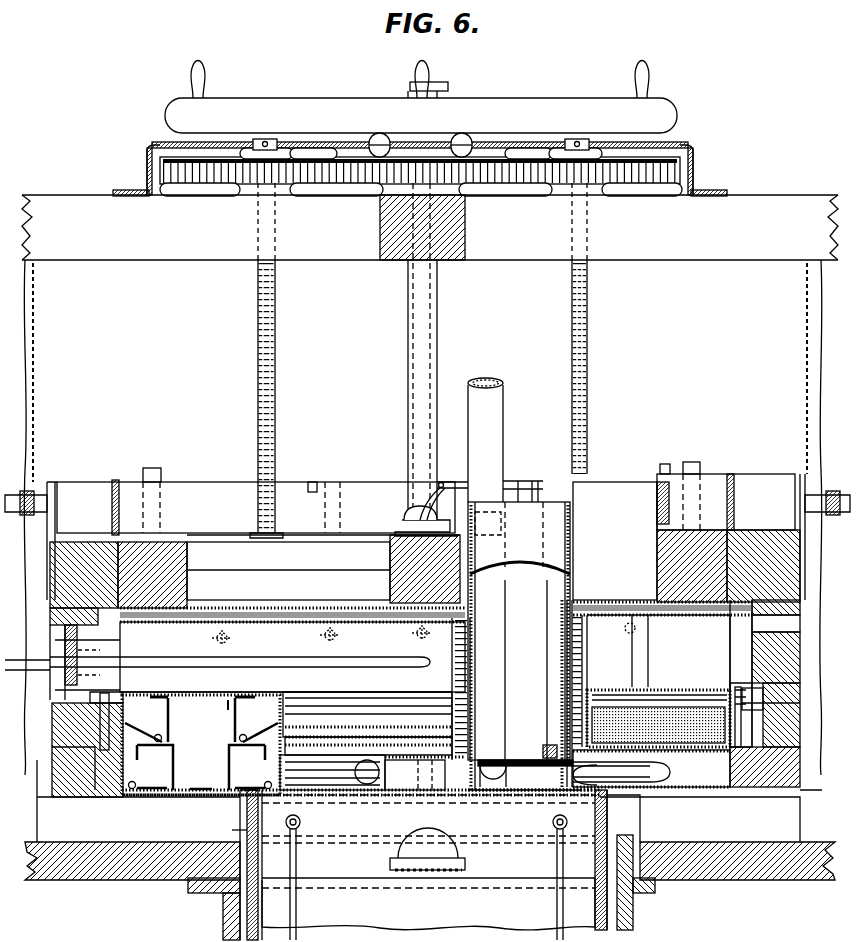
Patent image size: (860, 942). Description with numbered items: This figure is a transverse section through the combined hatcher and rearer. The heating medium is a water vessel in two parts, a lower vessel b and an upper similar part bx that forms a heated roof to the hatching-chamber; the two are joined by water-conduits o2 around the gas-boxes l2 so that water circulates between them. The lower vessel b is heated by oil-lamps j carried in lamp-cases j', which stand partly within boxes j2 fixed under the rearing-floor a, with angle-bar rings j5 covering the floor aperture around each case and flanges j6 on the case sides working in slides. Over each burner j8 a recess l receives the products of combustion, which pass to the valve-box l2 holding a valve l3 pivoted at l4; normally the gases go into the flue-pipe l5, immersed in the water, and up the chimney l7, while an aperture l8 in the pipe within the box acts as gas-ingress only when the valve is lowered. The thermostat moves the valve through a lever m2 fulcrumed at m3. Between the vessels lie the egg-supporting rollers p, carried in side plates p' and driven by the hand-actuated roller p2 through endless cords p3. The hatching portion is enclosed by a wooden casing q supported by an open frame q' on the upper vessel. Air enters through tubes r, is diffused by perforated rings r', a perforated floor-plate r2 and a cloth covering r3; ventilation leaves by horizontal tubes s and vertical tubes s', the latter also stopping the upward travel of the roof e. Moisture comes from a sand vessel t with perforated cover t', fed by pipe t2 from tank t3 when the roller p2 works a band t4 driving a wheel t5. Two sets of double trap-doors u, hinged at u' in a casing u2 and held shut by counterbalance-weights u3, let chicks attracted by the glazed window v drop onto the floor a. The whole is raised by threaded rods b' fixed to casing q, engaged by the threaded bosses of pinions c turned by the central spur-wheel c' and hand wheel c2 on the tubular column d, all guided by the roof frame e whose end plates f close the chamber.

The spur-pinion c is at (420, 153).
The central operating spur-wheel c' is at (421, 166).
The hand actuating-wheel c2 is at (322, 110).
The central tubular column d is at (432, 96).
The frame or roof e is at (96, 212).
The screw-rods b' is at (424, 360).
The end plates f is at (423, 517).
The wooden casing q is at (427, 641).
The open wooden frame q' is at (423, 569).
The egg-supporting rollers p is at (411, 730).
The roller-supporting plates or frames p' is at (779, 710).
The hand-actuated roller p2 is at (242, 490).
The endless cords p3 is at (116, 482).
The horizontal ventilation tubes s is at (495, 637).
The vertical ventilation tubes s' is at (421, 482).
The moistening vessel t is at (658, 681).
The perforated cover t' is at (659, 678).
The water-supply pipe t2 is at (650, 648).
The water-containing tank t3 is at (615, 541).
The band t4 is at (311, 484).
The wheel t5 is at (658, 505).
The lever m2 is at (532, 487).
The fulcrum m3 is at (432, 486).
The combustion chamber or recess l is at (440, 792).
The valve-box l2 is at (519, 646).
The valve l3 is at (492, 762).
The valve pivot l4 is at (516, 760).
The flue-pipe l5 is at (550, 746).
The chimney l7 is at (497, 418).
The aperture l8 is at (500, 522).
The water-conduits o2 is at (456, 678).
The glazed window v is at (75, 655).
The upper water vessel part bx is at (252, 617).
The air-supply tubes r is at (542, 770).
The perforated rings r' is at (368, 734).
The perforated metal floor-plate r2 is at (307, 742).
The textile or cloth covering r3 is at (346, 722).
The double trap-doors u is at (201, 759).
The trap-door hinges u' is at (202, 748).
The trap casing or chamber u2 is at (262, 726).
The counterbalance-weights u3 is at (158, 736).
The rearing-floor a is at (168, 852).
The water tank or heating vessel b is at (425, 815).
The oil-lamps j is at (428, 865).
The lamp-cases j' is at (631, 862).
The boxes j2 is at (228, 908).
The angle-bar rings j5 is at (247, 840).
The flanges j6 is at (608, 790).
The burner j8 is at (445, 850).